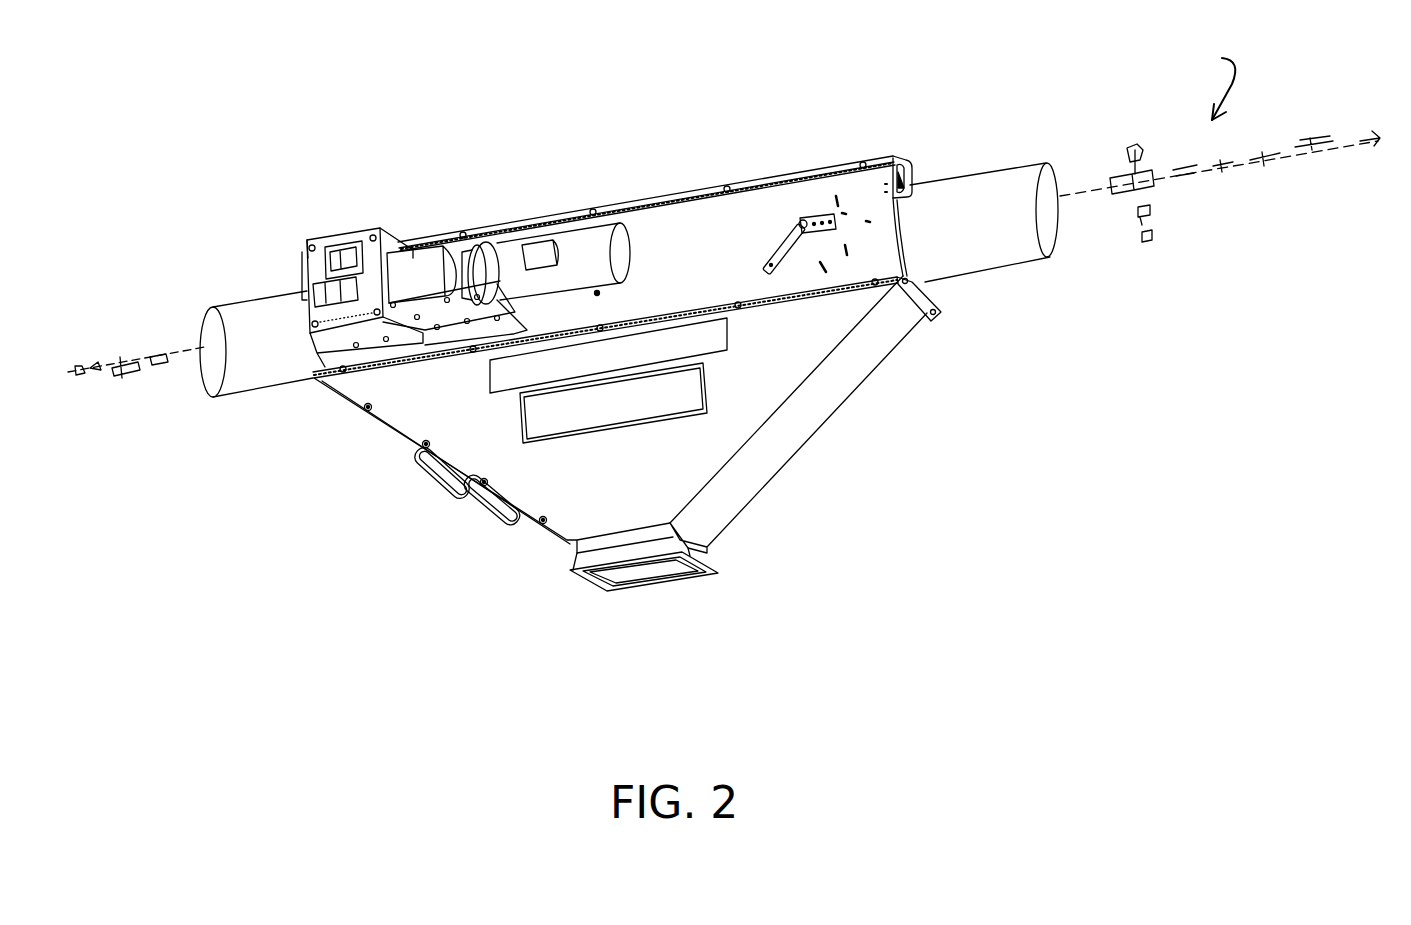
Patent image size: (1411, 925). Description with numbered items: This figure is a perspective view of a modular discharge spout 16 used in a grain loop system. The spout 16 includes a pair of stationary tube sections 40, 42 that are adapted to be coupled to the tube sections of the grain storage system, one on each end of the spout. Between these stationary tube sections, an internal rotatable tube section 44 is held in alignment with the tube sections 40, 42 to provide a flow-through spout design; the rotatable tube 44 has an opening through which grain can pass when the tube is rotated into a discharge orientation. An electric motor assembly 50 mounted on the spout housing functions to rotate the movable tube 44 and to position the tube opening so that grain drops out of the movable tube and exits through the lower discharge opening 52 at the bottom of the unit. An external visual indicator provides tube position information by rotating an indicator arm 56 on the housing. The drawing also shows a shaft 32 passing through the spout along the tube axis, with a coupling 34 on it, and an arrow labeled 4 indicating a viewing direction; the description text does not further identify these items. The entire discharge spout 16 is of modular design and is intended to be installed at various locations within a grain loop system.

The modular discharge spout 16 is at (779, 72).
The view direction arrow 4 is at (1210, 86).
The drive shaft / auger shaft 32 is at (95, 350).
The coupling 34 is at (1160, 223).
The stationary tube section 40 is at (223, 310).
The stationary tube section 42 is at (965, 180).
The rotatable tube section 44 is at (826, 273).
The electric motor assembly 50 is at (517, 243).
The lower discharge opening 52 is at (673, 573).
The indicator arm 56 is at (780, 247).